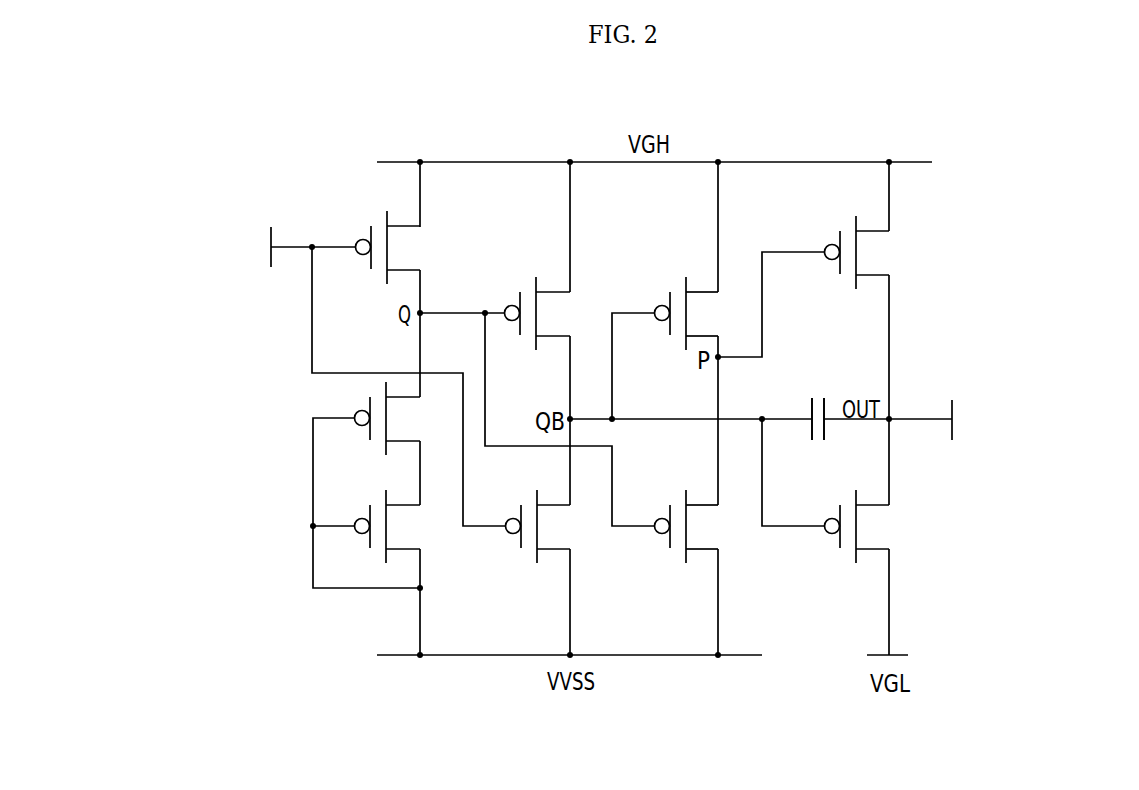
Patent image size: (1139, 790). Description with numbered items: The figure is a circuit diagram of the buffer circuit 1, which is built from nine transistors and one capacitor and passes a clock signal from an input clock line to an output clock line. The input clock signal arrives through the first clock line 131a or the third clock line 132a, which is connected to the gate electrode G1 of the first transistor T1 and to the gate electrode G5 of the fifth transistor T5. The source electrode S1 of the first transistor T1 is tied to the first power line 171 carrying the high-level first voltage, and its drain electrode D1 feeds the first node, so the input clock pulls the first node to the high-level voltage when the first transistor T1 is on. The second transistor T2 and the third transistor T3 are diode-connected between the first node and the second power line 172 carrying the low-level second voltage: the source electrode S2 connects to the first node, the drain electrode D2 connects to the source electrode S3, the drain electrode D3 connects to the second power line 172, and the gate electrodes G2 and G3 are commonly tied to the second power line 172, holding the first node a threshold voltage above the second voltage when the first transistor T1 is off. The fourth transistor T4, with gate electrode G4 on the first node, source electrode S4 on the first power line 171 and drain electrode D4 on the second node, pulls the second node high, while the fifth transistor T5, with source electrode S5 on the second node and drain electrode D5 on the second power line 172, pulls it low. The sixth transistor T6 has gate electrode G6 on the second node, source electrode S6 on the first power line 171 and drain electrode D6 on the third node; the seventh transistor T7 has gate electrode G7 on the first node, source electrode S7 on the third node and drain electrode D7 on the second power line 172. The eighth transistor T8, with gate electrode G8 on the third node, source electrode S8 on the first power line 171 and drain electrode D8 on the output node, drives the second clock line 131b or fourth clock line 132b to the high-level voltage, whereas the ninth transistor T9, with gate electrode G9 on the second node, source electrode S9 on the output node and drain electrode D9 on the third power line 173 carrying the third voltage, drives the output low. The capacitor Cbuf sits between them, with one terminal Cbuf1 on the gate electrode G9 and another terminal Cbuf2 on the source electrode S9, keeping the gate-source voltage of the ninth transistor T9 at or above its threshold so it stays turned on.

The buffer circuit 1 is at (366, 107).
The first power line 171 is at (805, 161).
The second power line 172 is at (653, 657).
The third power line 173 is at (905, 657).
The first clock line 131a is at (238, 214).
The third clock line 132a is at (270, 227).
The second clock line 131b is at (1006, 397).
The fourth clock line 132b is at (953, 401).
The first transistor T1 is at (409, 261).
The second transistor T2 is at (393, 434).
The third transistor T3 is at (393, 543).
The fourth transistor T4 is at (549, 336).
The fifth transistor T5 is at (544, 543).
The sixth transistor T6 is at (691, 329).
The seventh transistor T7 is at (692, 543).
The eighth transistor T8 is at (872, 261).
The ninth transistor T9 is at (872, 538).
The source electrode of the first transistor S1 is at (395, 227).
The source electrode of the second transistor S2 is at (394, 398).
The source electrode of the third transistor S3 is at (394, 506).
The source electrode of the fourth transistor S4 is at (544, 293).
The source electrode of the fifth transistor S5 is at (545, 506).
The source electrode of the sixth transistor S6 is at (694, 293).
The source electrode of the seventh transistor S7 is at (694, 506).
The source electrode of the eighth transistor S8 is at (864, 232).
The source electrode of the ninth transistor S9 is at (864, 506).
The drain electrode of the first transistor D1 is at (395, 269).
The drain electrode of the second transistor D2 is at (394, 440).
The drain electrode of the third transistor D3 is at (394, 548).
The drain electrode of the fourth transistor D4 is at (544, 335).
The drain electrode of the fifth transistor D5 is at (545, 548).
The drain electrode of the sixth transistor D6 is at (694, 335).
The drain electrode of the seventh transistor D7 is at (694, 548).
The drain electrode of the eighth transistor D8 is at (864, 274).
The drain electrode of the ninth transistor D9 is at (864, 548).
The gate electrode of the first transistor G1 is at (371, 268).
The gate electrode of the second transistor G2 is at (370, 439).
The gate electrode of the third transistor G3 is at (370, 547).
The gate electrode of the fourth transistor G4 is at (520, 336).
The gate electrode of the fifth transistor G5 is at (521, 547).
The gate electrode of the sixth transistor G6 is at (669, 333).
The gate electrode of the seventh transistor G7 is at (669, 547).
The gate electrode of the eighth transistor G8 is at (839, 273).
The gate electrode of the ninth transistor G9 is at (839, 547).
The capacitor Cbuf is at (825, 407).
The one terminal of the capacitor Cbuf1 is at (811, 400).
The another terminal of the capacitor Cbuf2 is at (826, 404).